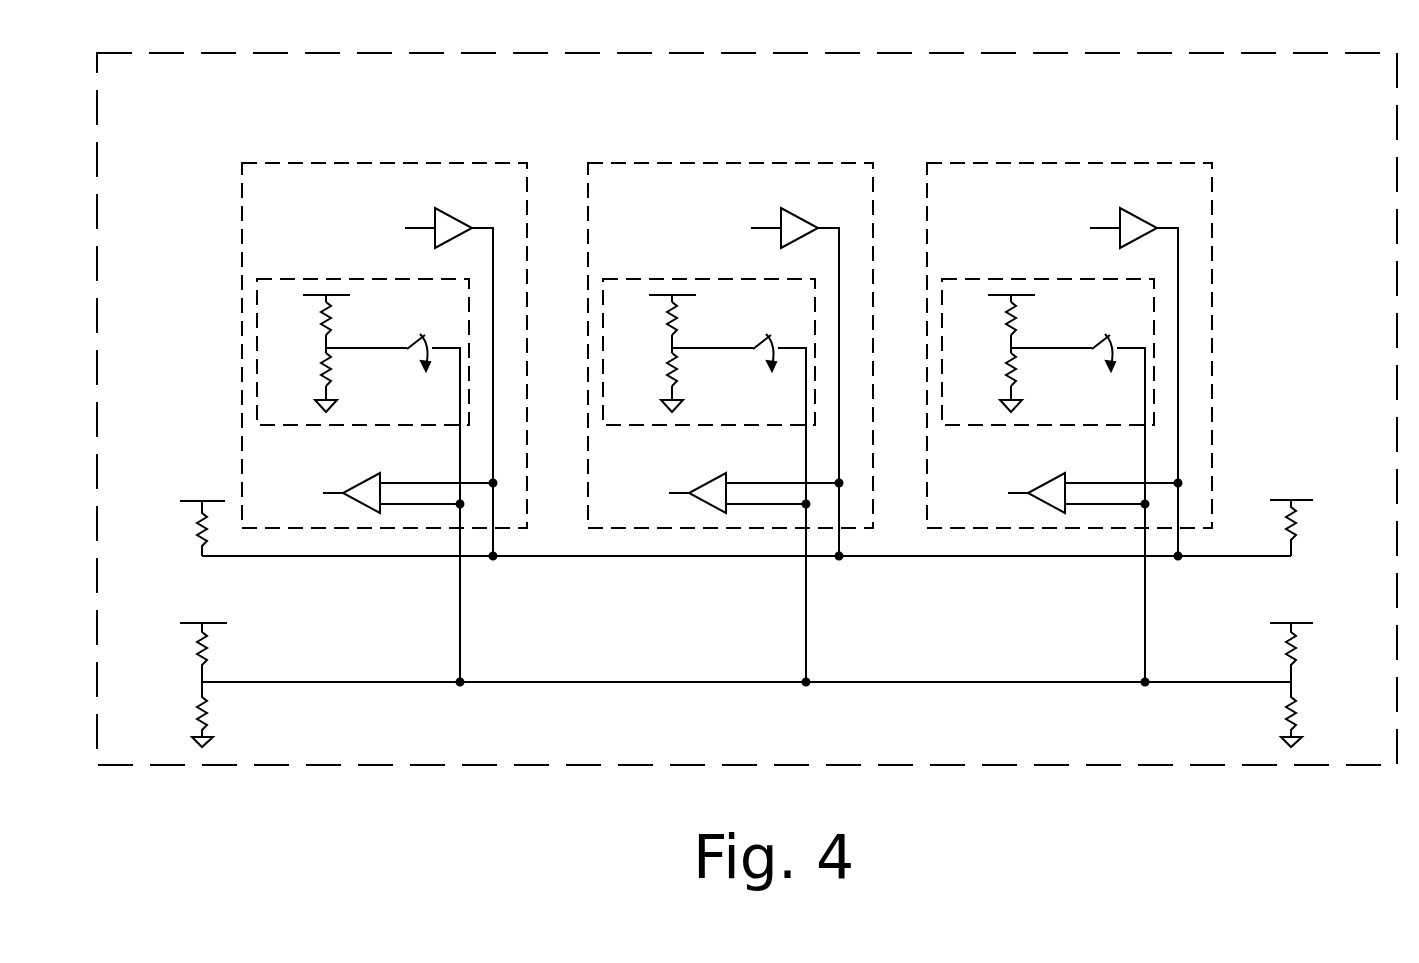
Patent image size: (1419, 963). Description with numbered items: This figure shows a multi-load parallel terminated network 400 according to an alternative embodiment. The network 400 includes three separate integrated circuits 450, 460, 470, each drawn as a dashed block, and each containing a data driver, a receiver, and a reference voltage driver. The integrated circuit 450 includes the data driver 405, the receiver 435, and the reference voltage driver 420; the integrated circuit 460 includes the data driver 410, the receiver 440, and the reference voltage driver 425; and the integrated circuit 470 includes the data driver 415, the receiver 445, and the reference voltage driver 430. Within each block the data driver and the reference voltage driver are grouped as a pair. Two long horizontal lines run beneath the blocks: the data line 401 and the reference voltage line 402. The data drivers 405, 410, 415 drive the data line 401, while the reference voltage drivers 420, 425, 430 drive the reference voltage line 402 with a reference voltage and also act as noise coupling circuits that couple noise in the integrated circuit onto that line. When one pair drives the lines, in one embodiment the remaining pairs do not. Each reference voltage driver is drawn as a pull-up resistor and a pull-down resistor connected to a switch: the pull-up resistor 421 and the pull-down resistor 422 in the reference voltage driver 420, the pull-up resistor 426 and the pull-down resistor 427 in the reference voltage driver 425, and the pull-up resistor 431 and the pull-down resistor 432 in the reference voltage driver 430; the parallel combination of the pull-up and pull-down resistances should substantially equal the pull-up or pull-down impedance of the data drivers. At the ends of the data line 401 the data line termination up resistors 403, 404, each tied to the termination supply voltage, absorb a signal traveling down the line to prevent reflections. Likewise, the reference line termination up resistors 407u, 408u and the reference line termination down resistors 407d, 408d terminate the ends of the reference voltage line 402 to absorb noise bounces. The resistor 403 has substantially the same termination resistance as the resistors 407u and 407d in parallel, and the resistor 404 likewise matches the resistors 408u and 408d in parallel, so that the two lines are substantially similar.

The network 400 is at (415, 766).
The data line 401 is at (570, 557).
The reference voltage line 402 is at (570, 680).
The data line termination up resistor 403 is at (197, 518).
The data line termination up resistor 404 is at (1287, 528).
The data driver 405 is at (452, 212).
The data driver 410 is at (798, 212).
The data driver 415 is at (1137, 212).
The reference line termination up resistor 407u is at (207, 653).
The reference line termination down resistor 407d is at (207, 713).
The reference line termination up resistor 408u is at (1287, 650).
The reference line termination down resistor 408d is at (1287, 710).
The reference voltage driver 420 is at (367, 425).
The reference voltage driver 425 is at (713, 425).
The reference voltage driver 430 is at (1052, 425).
The Rup" pull-up resistor 421 is at (320, 314).
The Rdn" pull-down resistor 422 is at (320, 370).
The Rup" pull-up resistor 426 is at (666, 314).
The Rdn" pull-down resistor 427 is at (666, 370).
The Rup" pull-up resistor 431 is at (1005, 314).
The Rdn" pull-down resistor 432 is at (1005, 370).
The receiver 435 is at (363, 480).
The receiver 440 is at (709, 480).
The receiver 445 is at (1048, 480).
The integrated circuit 450 is at (357, 162).
The integrated circuit 460 is at (703, 162).
The integrated circuit 470 is at (1042, 162).